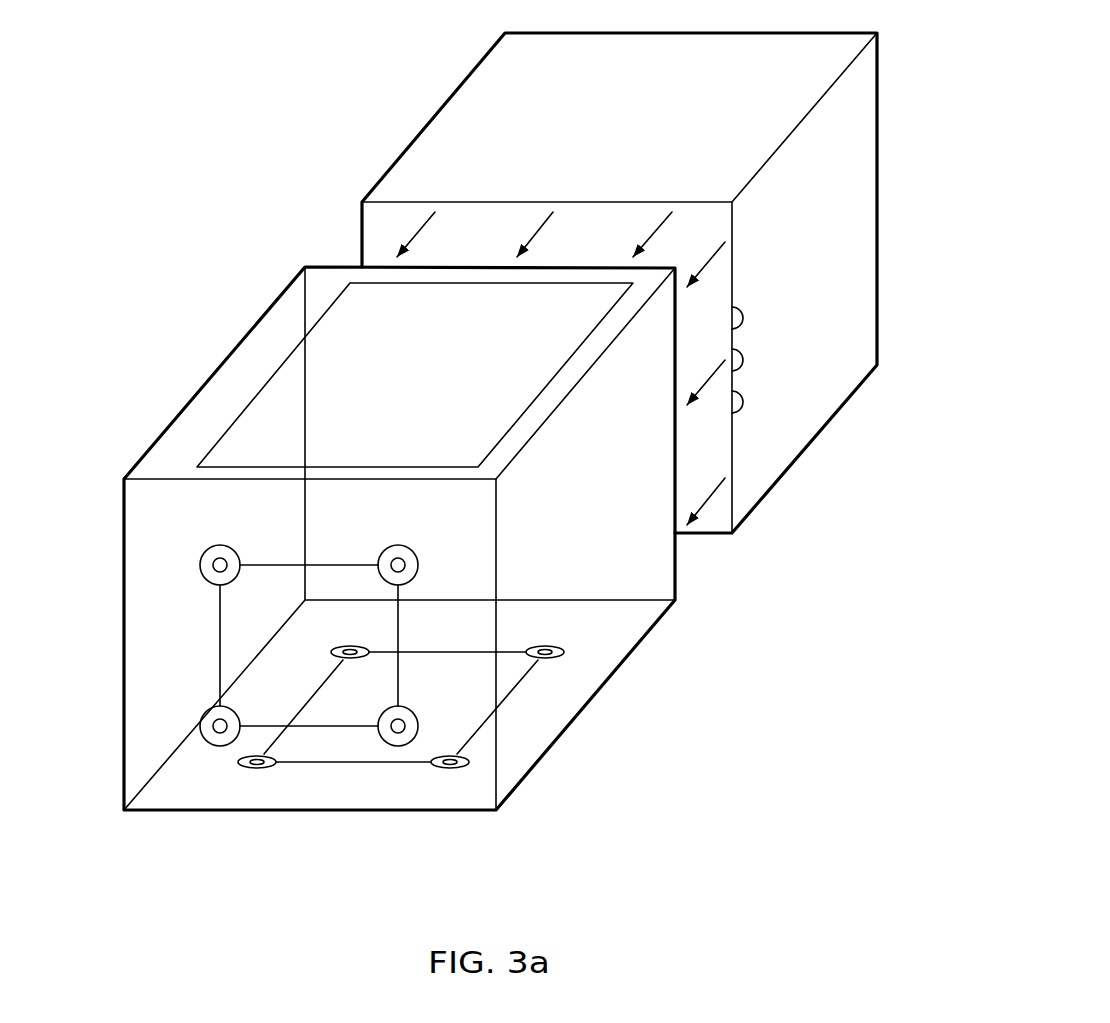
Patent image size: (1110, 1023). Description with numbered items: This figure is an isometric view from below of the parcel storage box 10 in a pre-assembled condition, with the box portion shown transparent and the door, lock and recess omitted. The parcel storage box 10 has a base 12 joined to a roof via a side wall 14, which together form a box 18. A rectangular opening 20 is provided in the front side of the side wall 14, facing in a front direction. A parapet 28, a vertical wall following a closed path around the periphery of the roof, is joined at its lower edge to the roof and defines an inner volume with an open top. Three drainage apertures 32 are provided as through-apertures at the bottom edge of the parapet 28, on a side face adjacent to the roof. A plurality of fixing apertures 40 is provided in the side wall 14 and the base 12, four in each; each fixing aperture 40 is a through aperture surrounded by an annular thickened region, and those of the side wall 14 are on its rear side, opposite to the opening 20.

The parcel storage box 10 is at (303, 175).
The base 12 is at (158, 632).
The side wall 14 is at (622, 630).
The box 18 is at (180, 328).
The opening 20 is at (430, 377).
The parapet 28 is at (468, 110).
The drainage apertures 32 is at (740, 403).
The fixing apertures 40 is at (206, 557).